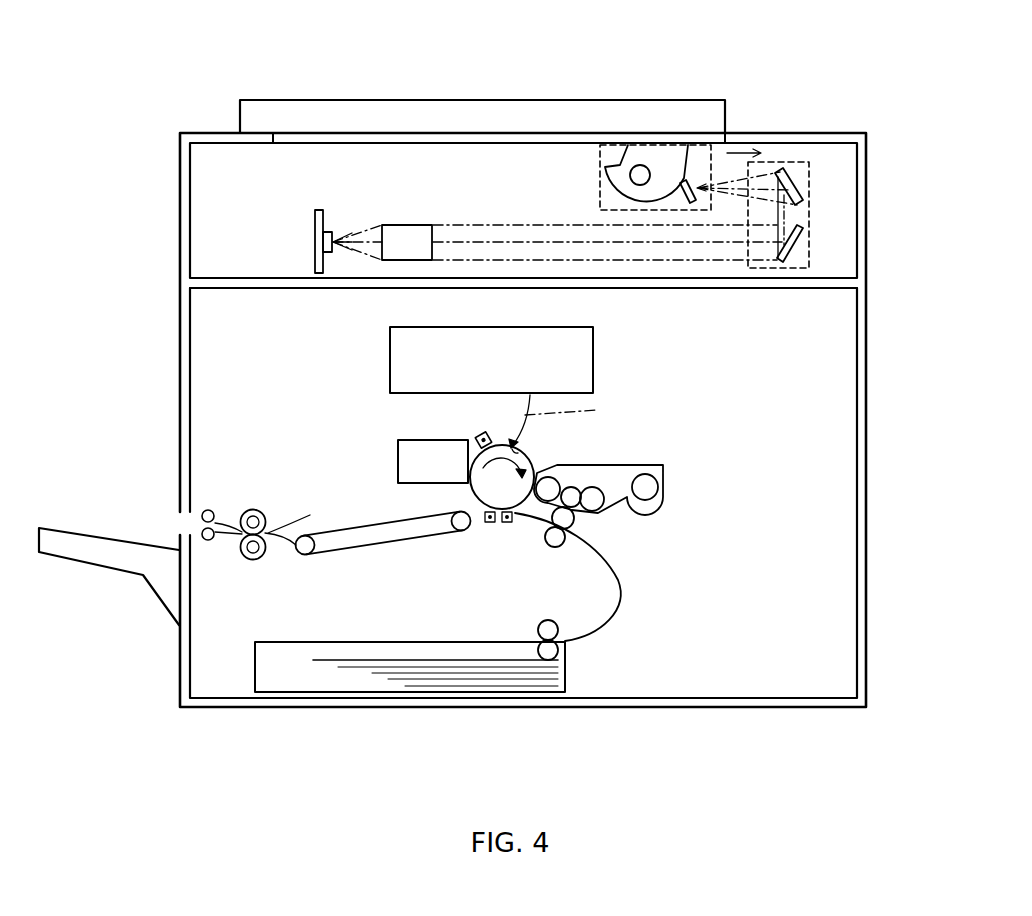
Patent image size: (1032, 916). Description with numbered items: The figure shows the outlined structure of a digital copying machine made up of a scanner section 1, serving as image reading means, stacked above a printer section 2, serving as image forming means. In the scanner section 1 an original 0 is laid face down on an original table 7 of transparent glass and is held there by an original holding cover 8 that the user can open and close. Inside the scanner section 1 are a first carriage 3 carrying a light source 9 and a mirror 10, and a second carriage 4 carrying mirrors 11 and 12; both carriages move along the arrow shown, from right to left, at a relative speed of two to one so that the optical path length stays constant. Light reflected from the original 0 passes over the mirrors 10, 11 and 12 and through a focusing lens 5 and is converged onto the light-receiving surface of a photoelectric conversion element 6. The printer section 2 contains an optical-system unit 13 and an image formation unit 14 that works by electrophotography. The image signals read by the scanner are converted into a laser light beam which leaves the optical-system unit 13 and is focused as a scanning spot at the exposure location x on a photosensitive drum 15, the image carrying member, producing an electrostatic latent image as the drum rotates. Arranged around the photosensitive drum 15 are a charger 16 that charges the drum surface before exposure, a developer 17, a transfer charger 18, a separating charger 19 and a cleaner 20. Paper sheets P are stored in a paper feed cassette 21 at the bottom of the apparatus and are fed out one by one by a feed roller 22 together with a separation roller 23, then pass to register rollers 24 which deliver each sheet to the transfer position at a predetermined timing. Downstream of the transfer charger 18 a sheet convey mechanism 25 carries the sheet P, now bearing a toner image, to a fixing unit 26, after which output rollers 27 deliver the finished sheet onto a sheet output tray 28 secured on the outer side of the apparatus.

The original 0 is at (477, 133).
The scanner section 1 is at (215, 220).
The printer section 2 is at (835, 503).
The first carriage 3 is at (617, 145).
The second carriage 4 is at (788, 162).
The focusing lens 5 is at (410, 225).
The photoelectric conversion element 6 is at (313, 230).
The original table 7 is at (325, 143).
The original holding cover 8 is at (397, 112).
The light source 9 is at (640, 165).
The mirror 10 is at (688, 180).
The mirror 11 is at (795, 183).
The mirror 12 is at (793, 248).
The optical-system unit 13 is at (593, 358).
The image formation unit 14 is at (632, 540).
The photosensitive drum 15 is at (470, 493).
The charger 16 is at (480, 437).
The developer 17 is at (663, 478).
The transfer charger 18 is at (508, 525).
The separating charger 19 is at (488, 525).
The cleaner 20 is at (398, 463).
The paper feed cassette 21 is at (332, 685).
The feed roller 22 is at (558, 650).
The separation roller 23 is at (538, 628).
The register rollers 24 is at (555, 547).
The sheet convey mechanism 25 is at (350, 550).
The fixing unit 26 is at (253, 509).
The output rollers 27 is at (209, 542).
The sheet output tray 28 is at (68, 560).
The paper sheet P is at (460, 685).
The exposure location x is at (517, 450).